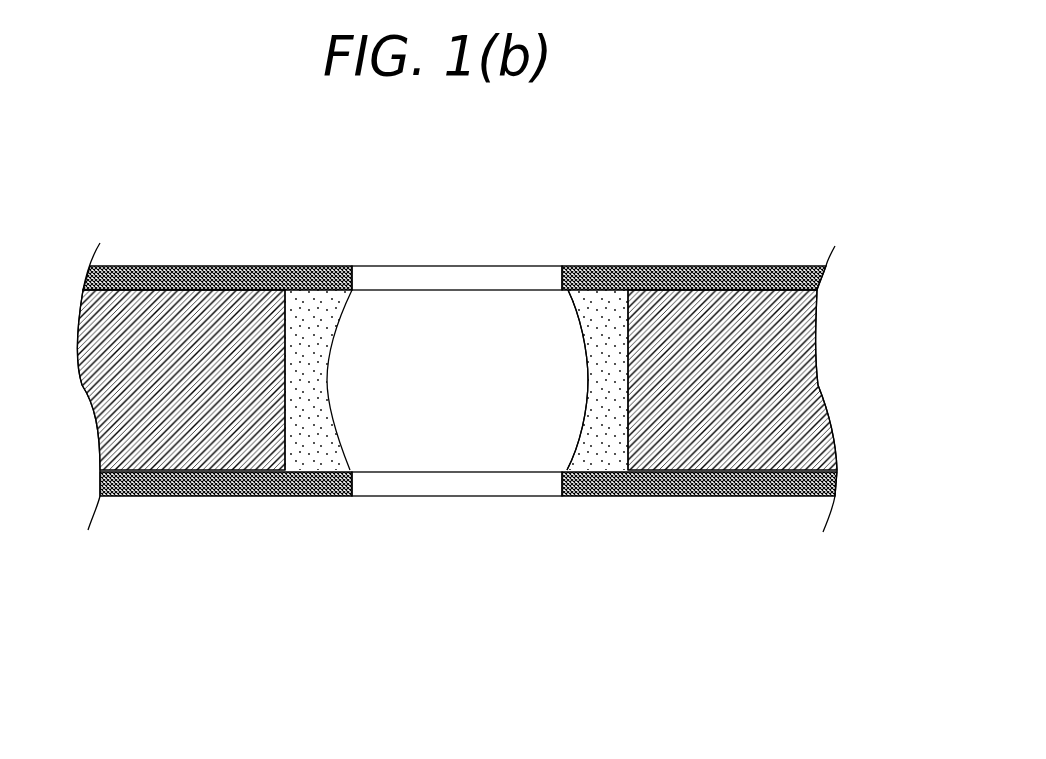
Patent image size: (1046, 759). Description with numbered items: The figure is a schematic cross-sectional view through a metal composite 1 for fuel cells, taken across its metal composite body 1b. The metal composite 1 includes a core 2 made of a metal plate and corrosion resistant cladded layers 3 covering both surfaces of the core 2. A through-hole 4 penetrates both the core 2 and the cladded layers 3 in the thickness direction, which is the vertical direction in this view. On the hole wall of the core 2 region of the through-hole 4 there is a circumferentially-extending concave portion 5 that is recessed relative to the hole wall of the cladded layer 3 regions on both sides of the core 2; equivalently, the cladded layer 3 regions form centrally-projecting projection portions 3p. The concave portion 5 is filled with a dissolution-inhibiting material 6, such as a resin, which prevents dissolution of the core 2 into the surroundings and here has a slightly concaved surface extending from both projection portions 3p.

The metal composite 1 is at (789, 221).
The metal composite body 1b is at (670, 605).
The core 2 is at (690, 468).
The cladded layer 3 is at (207, 266).
The projection portion 3p is at (333, 266).
The through-hole 4 is at (465, 390).
The concave portion 5 is at (569, 386).
The dissolution-inhibiting material 6 is at (585, 450).